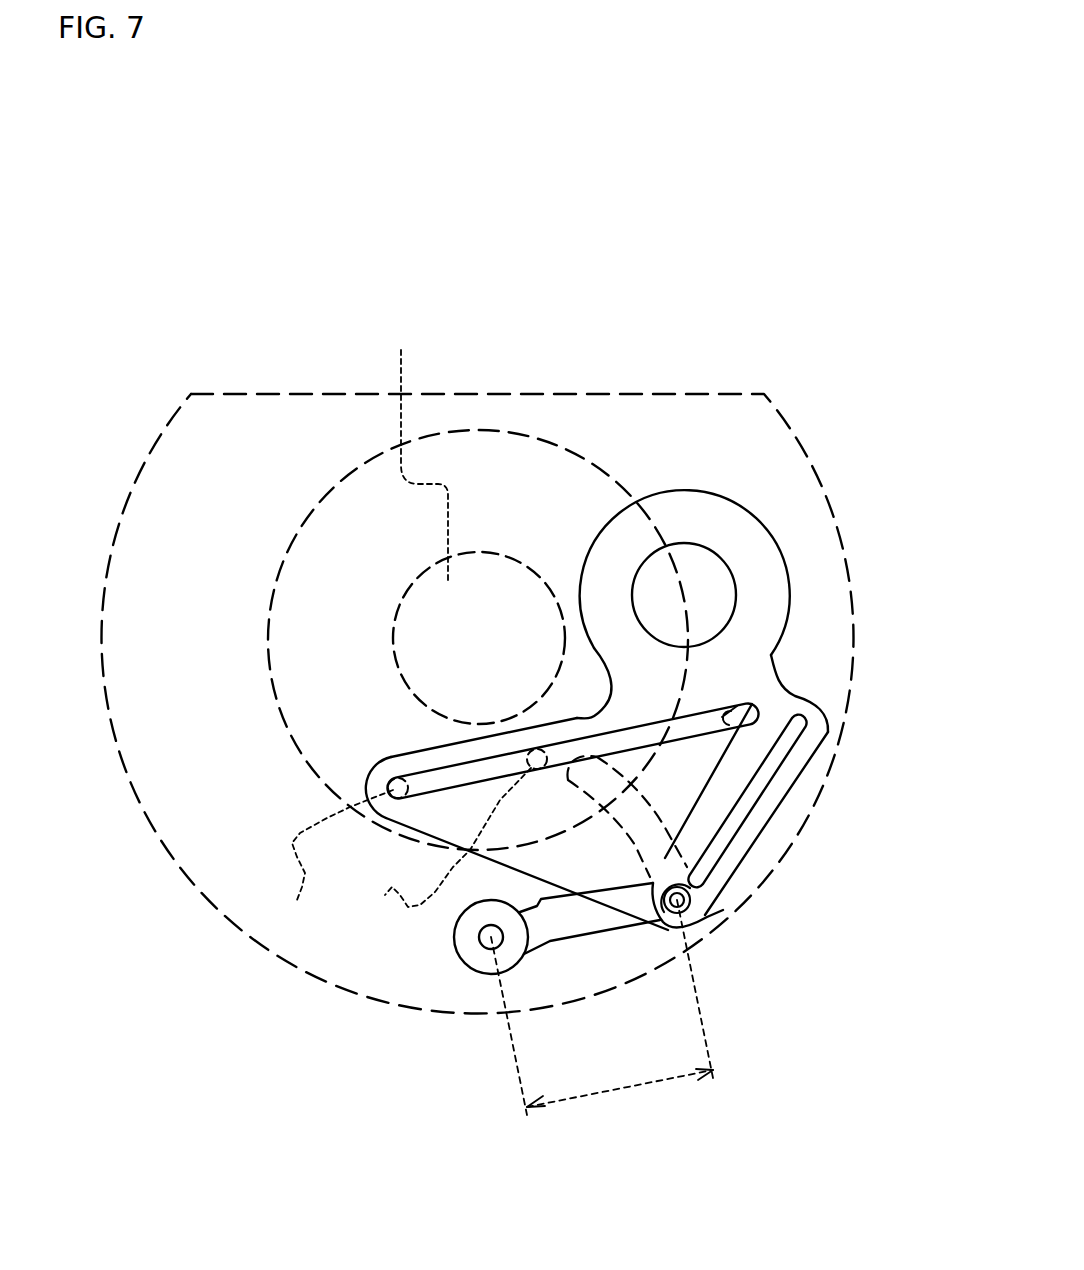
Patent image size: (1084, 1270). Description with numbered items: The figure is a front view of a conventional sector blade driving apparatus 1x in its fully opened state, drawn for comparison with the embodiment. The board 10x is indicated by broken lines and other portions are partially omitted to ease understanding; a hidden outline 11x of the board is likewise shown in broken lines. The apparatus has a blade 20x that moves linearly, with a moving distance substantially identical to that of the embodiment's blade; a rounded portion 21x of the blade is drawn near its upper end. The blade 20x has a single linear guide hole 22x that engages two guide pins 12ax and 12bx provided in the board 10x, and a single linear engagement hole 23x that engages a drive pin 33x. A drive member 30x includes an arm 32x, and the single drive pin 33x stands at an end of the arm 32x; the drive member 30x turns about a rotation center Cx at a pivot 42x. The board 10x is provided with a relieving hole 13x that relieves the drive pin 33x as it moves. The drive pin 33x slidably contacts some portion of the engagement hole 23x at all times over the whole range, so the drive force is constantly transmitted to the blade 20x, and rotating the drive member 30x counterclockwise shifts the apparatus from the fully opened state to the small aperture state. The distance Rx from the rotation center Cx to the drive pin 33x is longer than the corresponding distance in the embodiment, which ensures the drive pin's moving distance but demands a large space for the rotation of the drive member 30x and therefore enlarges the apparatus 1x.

The sector blade driving apparatus 1x is at (567, 360).
The board 10x is at (684, 388).
The housing portion 11x is at (412, 443).
The guide pin 12ax is at (297, 900).
The guide pin 12bx is at (385, 895).
The relieving hole 13x is at (665, 818).
The blade 20x is at (747, 553).
The shaft hole 21x is at (718, 607).
The guide hole 22x is at (750, 703).
The engagement hole 23x is at (757, 780).
The drive member 30x is at (560, 942).
The arm 32x is at (683, 925).
The drive pin 33x is at (722, 910).
The pivot boss 42x is at (473, 965).
The rotation center Cx is at (491, 937).
The distance Rx is at (620, 1078).